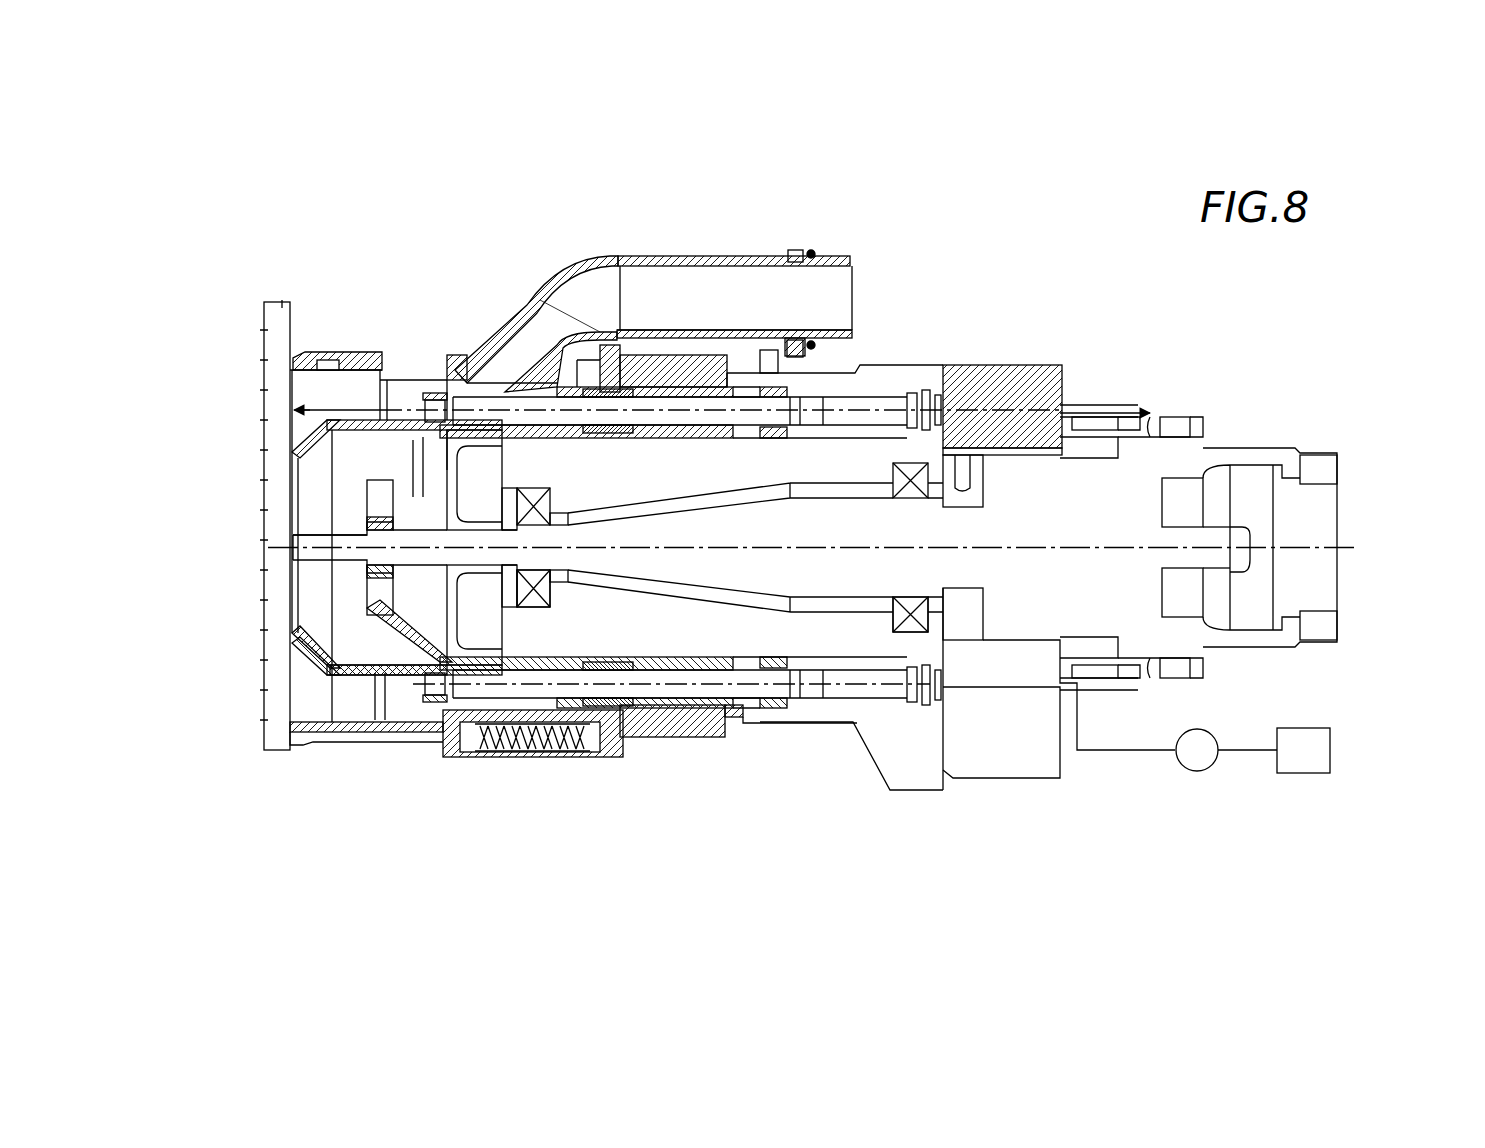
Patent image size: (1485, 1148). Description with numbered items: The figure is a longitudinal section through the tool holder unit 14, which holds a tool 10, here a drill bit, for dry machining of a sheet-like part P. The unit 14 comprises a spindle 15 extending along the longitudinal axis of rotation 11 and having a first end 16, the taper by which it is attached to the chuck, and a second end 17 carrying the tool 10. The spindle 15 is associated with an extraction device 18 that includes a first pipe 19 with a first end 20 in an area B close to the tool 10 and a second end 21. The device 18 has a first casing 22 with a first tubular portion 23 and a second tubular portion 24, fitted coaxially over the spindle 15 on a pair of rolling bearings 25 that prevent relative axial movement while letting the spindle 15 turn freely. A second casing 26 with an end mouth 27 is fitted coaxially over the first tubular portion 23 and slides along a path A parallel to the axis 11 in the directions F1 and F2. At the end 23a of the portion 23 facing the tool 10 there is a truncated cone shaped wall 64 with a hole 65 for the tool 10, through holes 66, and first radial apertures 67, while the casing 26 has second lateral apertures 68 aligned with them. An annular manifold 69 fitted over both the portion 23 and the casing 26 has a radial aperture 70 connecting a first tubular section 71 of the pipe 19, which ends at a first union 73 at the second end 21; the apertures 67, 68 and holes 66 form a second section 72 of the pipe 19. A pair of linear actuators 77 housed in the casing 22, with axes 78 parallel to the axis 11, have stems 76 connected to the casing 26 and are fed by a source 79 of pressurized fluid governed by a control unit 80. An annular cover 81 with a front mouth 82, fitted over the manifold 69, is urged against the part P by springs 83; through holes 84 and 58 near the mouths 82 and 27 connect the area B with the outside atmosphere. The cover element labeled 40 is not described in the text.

The tool 10 is at (343, 559).
The longitudinal axis of rotation 11 is at (1324, 550).
The tool holder unit 14 is at (1014, 241).
The spindle 15 is at (1070, 486).
The first end 16 is at (1273, 443).
The second end 17 is at (423, 570).
The extraction device 18 is at (486, 316).
The first pipe 19 is at (517, 366).
The first end 20 is at (343, 478).
The second end 21 is at (858, 278).
The first casing 22 is at (947, 363).
The first tubular portion 23 is at (652, 740).
The end 23a is at (428, 664).
The second tubular portion 24 is at (933, 363).
The rolling bearings 25 is at (545, 595).
The second casing 26 is at (325, 676).
The end mouth 27 is at (294, 618).
The cover 40 is at (843, 341).
The through holes 58 is at (300, 648).
The truncated cone shaped wall 64 is at (392, 632).
The hole 65 is at (365, 536).
The through holes 66 is at (373, 593).
The first radial apertures 67 is at (484, 584).
The second lateral apertures 68 is at (399, 434).
The annular manifold 69 is at (357, 491).
The radial aperture 70 is at (523, 396).
The first tubular section 71 is at (616, 256).
The second section 72 is at (462, 465).
The first union 73 is at (836, 257).
The stems 76 is at (562, 692).
The linear actuators 77 is at (911, 693).
The axes 78 is at (690, 690).
The source of fluid under pressure 79 is at (1200, 760).
The control unit 80 is at (1310, 760).
The annular cover 81 is at (295, 745).
The mouth 82 is at (288, 366).
The springs 83 is at (493, 746).
The through holes 84 is at (326, 368).
The part P is at (271, 320).
The path A is at (738, 398).
The area B is at (311, 488).
The direction F1 is at (303, 408).
The direction F2 is at (1123, 413).